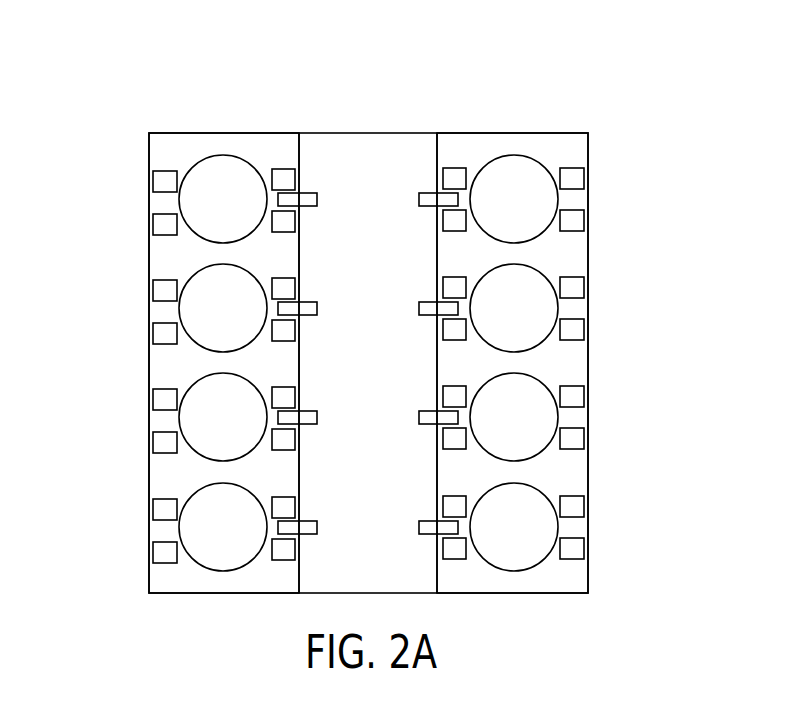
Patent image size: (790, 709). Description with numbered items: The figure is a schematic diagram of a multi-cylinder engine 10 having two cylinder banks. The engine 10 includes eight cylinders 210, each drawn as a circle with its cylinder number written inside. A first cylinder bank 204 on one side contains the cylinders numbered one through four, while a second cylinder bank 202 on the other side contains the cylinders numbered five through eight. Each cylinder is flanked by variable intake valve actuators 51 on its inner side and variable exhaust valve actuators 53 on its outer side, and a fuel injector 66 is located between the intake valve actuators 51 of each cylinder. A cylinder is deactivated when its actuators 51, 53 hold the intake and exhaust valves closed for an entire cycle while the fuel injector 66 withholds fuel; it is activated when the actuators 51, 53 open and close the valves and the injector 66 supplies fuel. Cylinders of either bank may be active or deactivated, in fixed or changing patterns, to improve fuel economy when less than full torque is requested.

The engine 10 is at (441, 62).
The second cylinder bank 202 is at (206, 90).
The first cylinder bank 204 is at (543, 98).
The cylinders 210 is at (180, 202).
The variable intake valve actuators 51 is at (294, 178).
The variable exhaust valve actuators 53 is at (161, 184).
The fuel injectors 66 is at (308, 204).